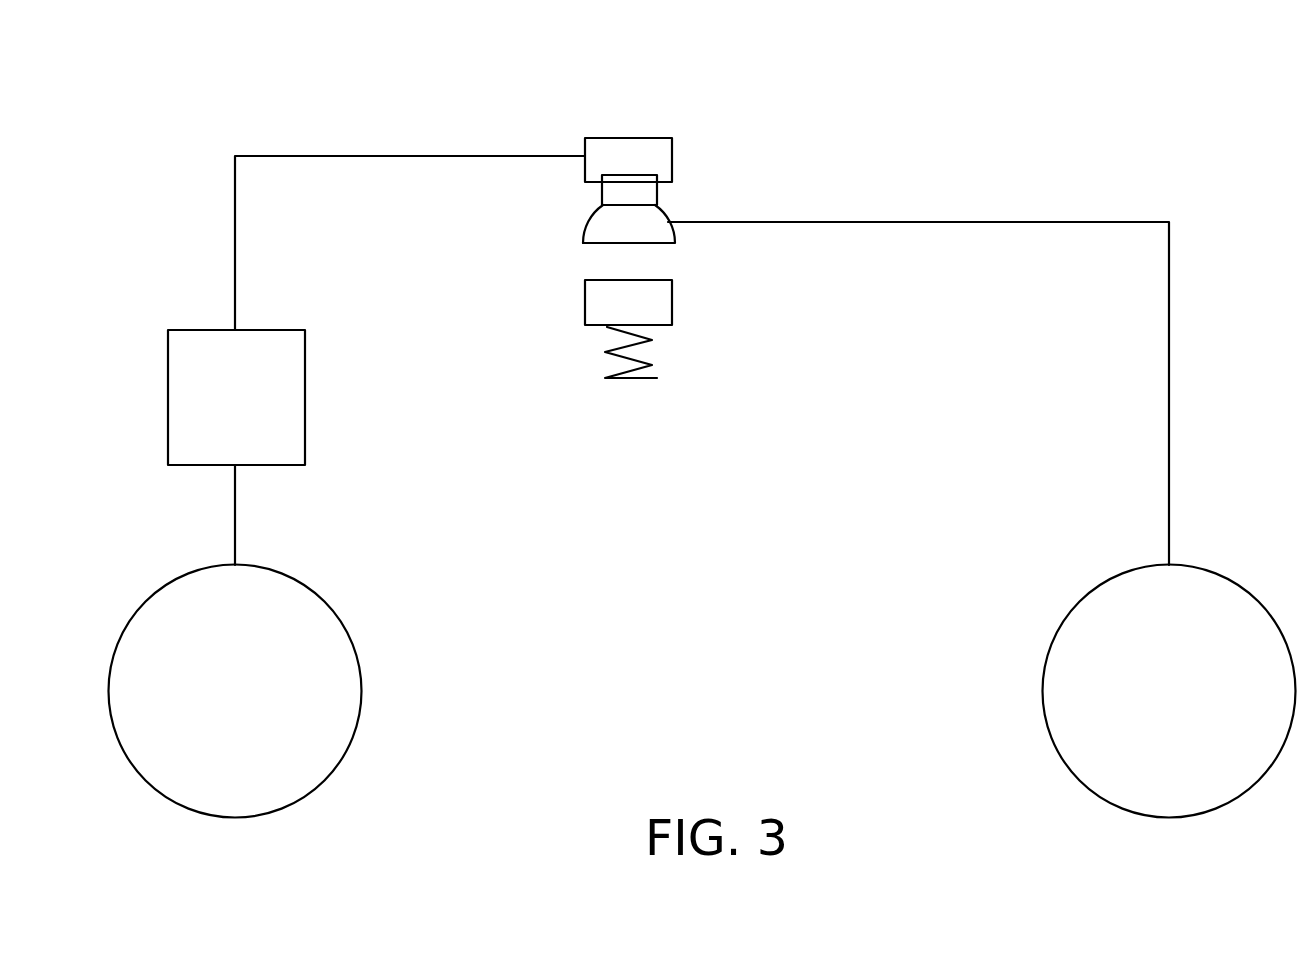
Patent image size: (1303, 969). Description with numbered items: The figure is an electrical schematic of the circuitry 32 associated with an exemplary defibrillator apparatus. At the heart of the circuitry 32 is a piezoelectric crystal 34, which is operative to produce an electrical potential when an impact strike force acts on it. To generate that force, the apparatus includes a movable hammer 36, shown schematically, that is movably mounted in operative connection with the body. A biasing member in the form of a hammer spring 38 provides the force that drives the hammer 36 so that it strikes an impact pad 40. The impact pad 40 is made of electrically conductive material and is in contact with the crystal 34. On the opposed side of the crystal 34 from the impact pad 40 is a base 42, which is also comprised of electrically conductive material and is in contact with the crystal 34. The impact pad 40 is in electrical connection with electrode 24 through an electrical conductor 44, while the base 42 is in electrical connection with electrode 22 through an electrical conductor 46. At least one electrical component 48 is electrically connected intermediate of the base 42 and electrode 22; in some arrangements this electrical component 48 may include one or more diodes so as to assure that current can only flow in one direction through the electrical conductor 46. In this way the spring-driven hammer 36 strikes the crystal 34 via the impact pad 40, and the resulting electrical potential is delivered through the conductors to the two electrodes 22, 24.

The electrode 22 is at (362, 690).
The electrode 24 is at (1215, 808).
The circuitry 32 is at (948, 110).
The piezoelectric crystal 34 is at (657, 190).
The movable hammer 36 is at (672, 298).
The hammer spring 38 is at (648, 367).
The impact pad 40 is at (590, 217).
The base 42 is at (627, 138).
The electrical conductor 44 is at (1007, 222).
The electrical conductor 46 is at (400, 156).
The electrical component 48 is at (305, 396).